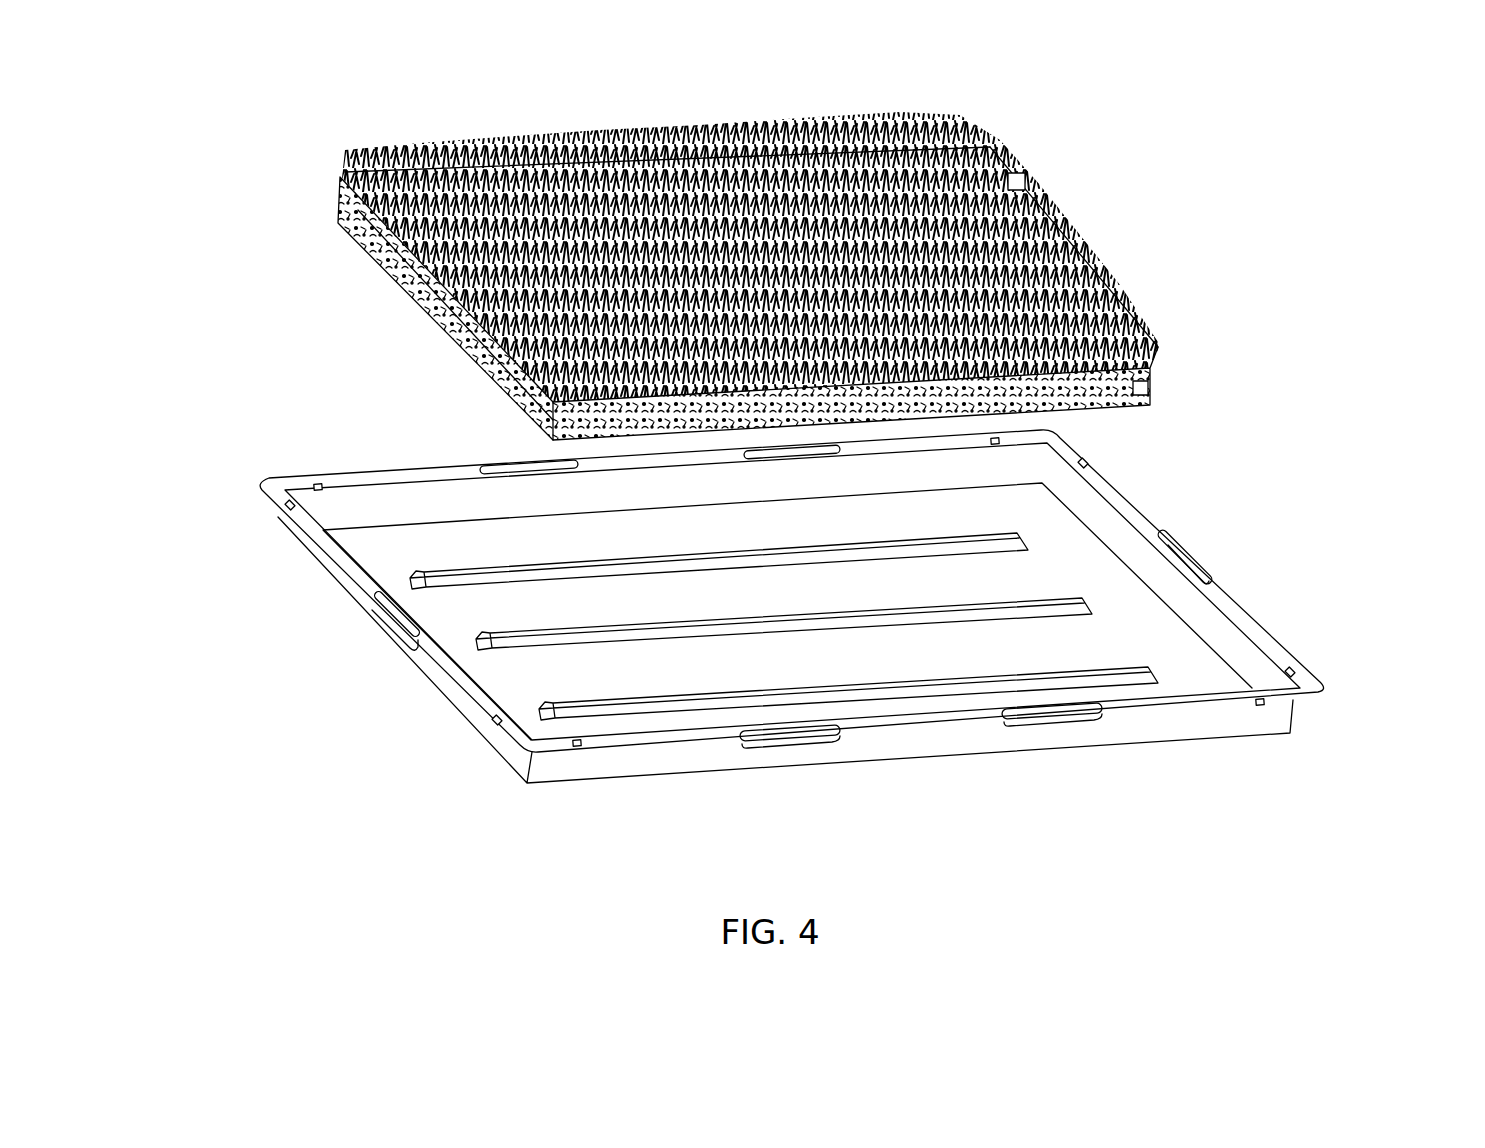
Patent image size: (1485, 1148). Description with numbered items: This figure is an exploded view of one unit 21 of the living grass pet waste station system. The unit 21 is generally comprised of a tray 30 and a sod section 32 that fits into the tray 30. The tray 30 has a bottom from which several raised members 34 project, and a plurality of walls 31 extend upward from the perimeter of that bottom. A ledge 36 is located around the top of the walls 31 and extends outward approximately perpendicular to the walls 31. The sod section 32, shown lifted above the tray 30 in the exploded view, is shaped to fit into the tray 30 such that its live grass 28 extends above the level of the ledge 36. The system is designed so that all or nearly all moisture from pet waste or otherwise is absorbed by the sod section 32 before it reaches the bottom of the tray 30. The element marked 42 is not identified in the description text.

The unit 21 is at (1343, 841).
The sod section 32 is at (318, 170).
The live grass 28 is at (1027, 184).
The connector tab 42 is at (1150, 390).
The tray 30 is at (243, 513).
The walls 31 is at (1130, 548).
The raised members 34 is at (563, 647).
The ledge 36 is at (668, 737).